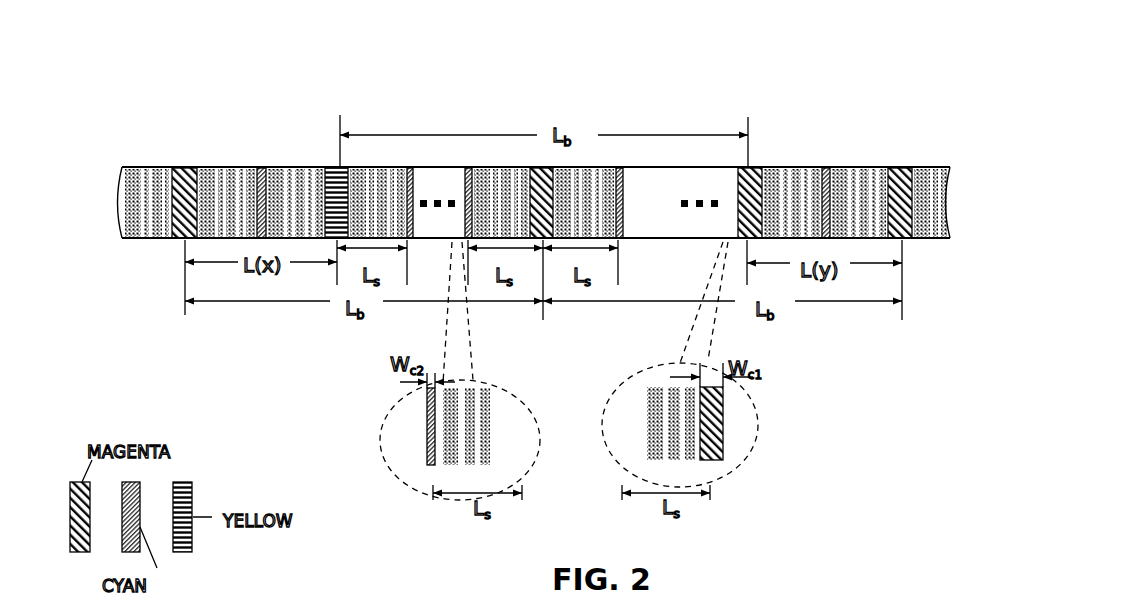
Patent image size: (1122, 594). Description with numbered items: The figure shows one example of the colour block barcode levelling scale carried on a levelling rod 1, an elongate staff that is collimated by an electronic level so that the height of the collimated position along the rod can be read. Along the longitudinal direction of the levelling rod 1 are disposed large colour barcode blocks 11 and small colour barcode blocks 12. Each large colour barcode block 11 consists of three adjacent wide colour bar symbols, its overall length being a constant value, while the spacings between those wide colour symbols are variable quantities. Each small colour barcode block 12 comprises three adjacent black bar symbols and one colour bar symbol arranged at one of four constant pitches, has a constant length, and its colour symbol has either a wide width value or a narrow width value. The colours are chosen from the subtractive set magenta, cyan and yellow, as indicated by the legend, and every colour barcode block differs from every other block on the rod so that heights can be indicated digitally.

The levelling rod 1 is at (948, 167).
The large colour barcode block 11 is at (540, 167).
The small colour barcode block 12 is at (235, 167).